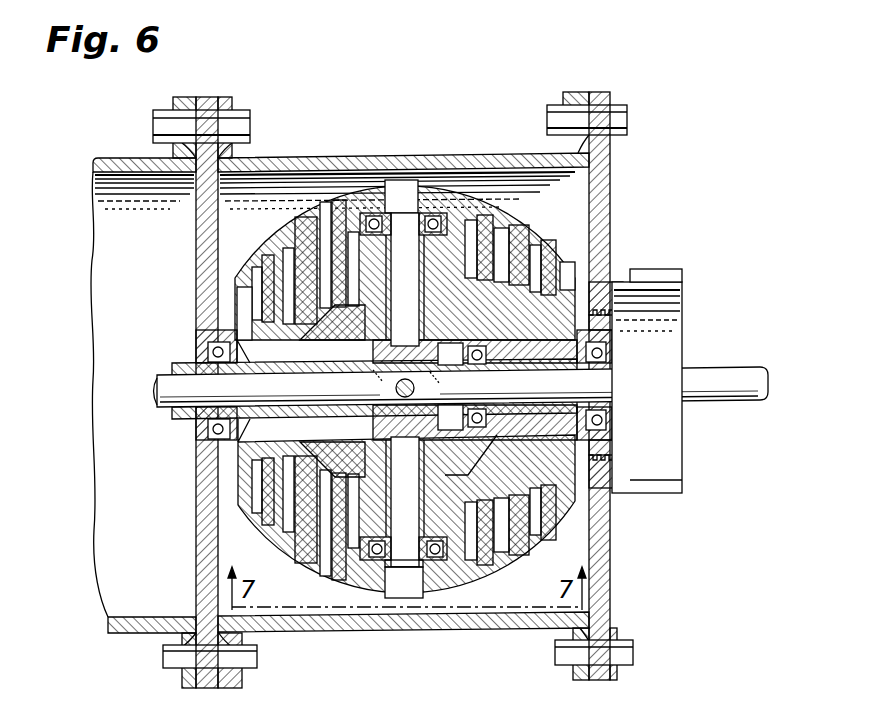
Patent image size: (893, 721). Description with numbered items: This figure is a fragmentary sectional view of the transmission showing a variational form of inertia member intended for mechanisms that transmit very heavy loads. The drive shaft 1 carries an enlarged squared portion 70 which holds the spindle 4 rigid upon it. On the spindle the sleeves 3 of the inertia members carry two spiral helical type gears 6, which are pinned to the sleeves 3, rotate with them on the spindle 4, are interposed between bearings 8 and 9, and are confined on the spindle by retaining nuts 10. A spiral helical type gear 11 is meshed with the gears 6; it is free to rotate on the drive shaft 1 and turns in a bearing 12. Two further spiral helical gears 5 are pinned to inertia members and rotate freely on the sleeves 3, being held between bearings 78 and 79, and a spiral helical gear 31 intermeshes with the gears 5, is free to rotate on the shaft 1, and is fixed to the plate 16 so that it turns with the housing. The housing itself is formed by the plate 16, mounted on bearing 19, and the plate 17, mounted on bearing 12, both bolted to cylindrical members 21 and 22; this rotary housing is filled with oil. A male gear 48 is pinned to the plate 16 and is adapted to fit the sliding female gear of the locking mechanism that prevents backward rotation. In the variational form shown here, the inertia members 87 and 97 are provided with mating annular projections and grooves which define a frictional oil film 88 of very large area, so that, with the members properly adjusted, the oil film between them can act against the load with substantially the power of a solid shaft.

The drive shaft 1 is at (735, 374).
The sleeves 3 is at (430, 247).
The spindle 4 is at (395, 550).
The spiral helical gears 5 is at (310, 337).
The spiral helical type gears 6 is at (475, 390).
The bearing 8 is at (347, 353).
The bearing 9 is at (433, 218).
The retaining nuts 10 is at (405, 195).
The spiral helical type gear 11 is at (340, 417).
The bearing 12 is at (198, 443).
The plate 16 is at (610, 540).
The plate 17 is at (208, 543).
The bearing 19 is at (613, 347).
The cylindrical member 21 is at (380, 158).
The cylindrical member 22 is at (110, 162).
The spiral helical gear 31 is at (527, 430).
The male gear 48 is at (680, 281).
The enlarged squared portion 70 is at (420, 390).
The bearing 78 is at (342, 284).
The bearing 79 is at (353, 240).
The inertia member 87 is at (600, 297).
The frictional oil film 88 is at (516, 245).
The inertia member 97 is at (578, 253).